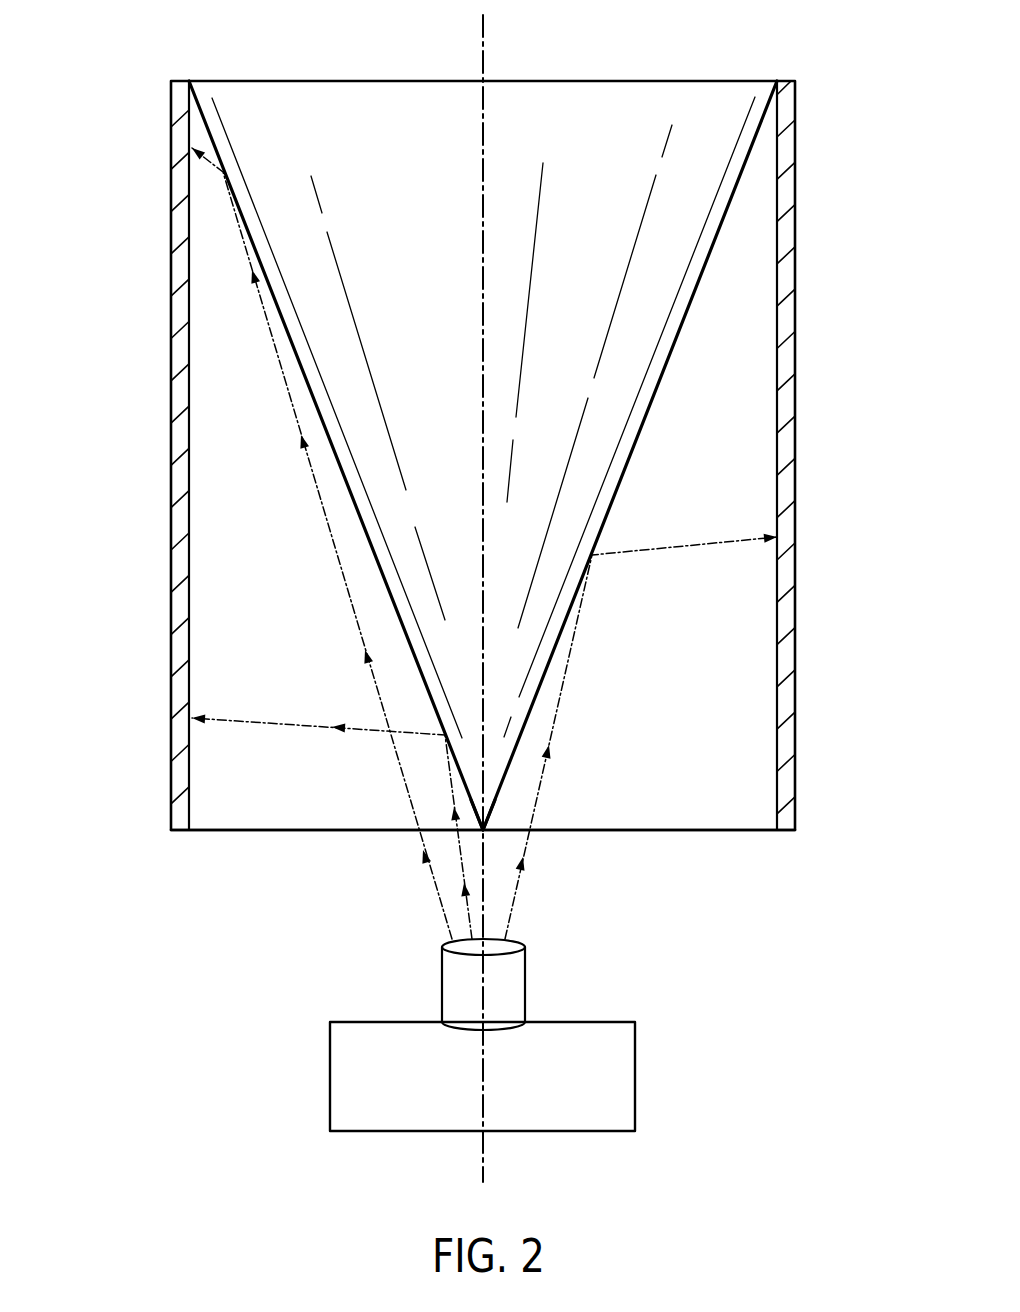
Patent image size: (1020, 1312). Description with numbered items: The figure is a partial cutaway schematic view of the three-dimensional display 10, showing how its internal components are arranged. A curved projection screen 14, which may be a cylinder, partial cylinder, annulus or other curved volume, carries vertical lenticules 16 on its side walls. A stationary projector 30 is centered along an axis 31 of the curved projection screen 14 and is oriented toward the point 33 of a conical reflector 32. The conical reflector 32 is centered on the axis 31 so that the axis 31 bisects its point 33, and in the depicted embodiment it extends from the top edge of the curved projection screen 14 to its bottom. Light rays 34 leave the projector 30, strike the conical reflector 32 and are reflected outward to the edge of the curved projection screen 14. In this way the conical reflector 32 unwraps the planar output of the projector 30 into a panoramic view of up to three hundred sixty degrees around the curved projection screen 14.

The 3D display 10 is at (172, 68).
The curved projection screen 14 is at (280, 830).
The lenticules 16 is at (171, 440).
The projector 30 is at (647, 1012).
The axis 31 is at (485, 60).
The conical reflector 32 is at (630, 457).
The point 33 is at (487, 838).
The light rays 34 is at (467, 900).